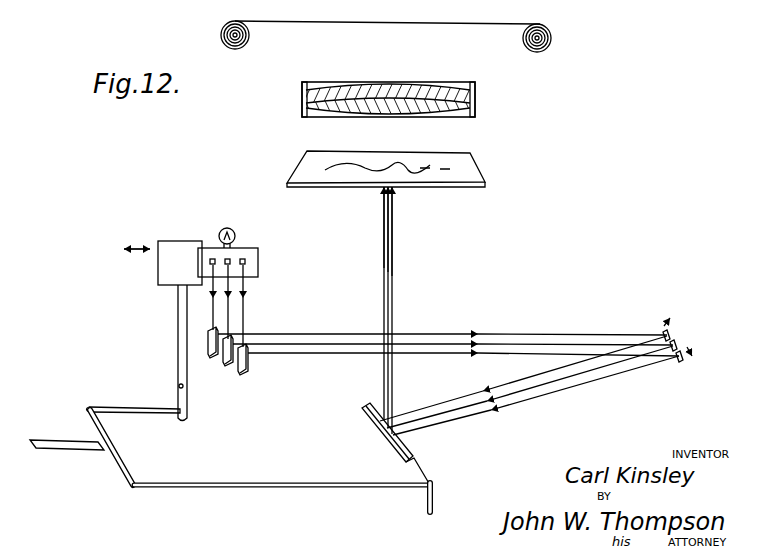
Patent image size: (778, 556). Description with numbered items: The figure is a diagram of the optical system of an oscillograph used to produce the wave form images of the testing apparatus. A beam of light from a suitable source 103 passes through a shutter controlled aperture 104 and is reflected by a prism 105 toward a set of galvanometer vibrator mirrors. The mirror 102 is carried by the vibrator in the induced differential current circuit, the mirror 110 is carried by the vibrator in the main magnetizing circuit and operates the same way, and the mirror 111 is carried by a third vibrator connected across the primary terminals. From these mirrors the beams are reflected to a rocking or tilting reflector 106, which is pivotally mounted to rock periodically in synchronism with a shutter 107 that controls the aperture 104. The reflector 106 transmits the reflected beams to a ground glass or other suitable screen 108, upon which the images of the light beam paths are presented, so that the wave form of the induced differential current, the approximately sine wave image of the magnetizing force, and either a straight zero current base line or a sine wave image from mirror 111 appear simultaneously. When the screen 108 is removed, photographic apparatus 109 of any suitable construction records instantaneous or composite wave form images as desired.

The mirror 102 is at (664, 332).
The light source 103 is at (237, 232).
The shutter controlled aperture 104 is at (219, 233).
The prism 105 is at (215, 359).
The rocking or tilting reflector 106 is at (380, 440).
The shutter 107 is at (166, 266).
The screen 108 is at (465, 163).
The photographic apparatus 109 is at (556, 115).
The mirror 110 is at (680, 343).
The mirror 111 is at (679, 363).